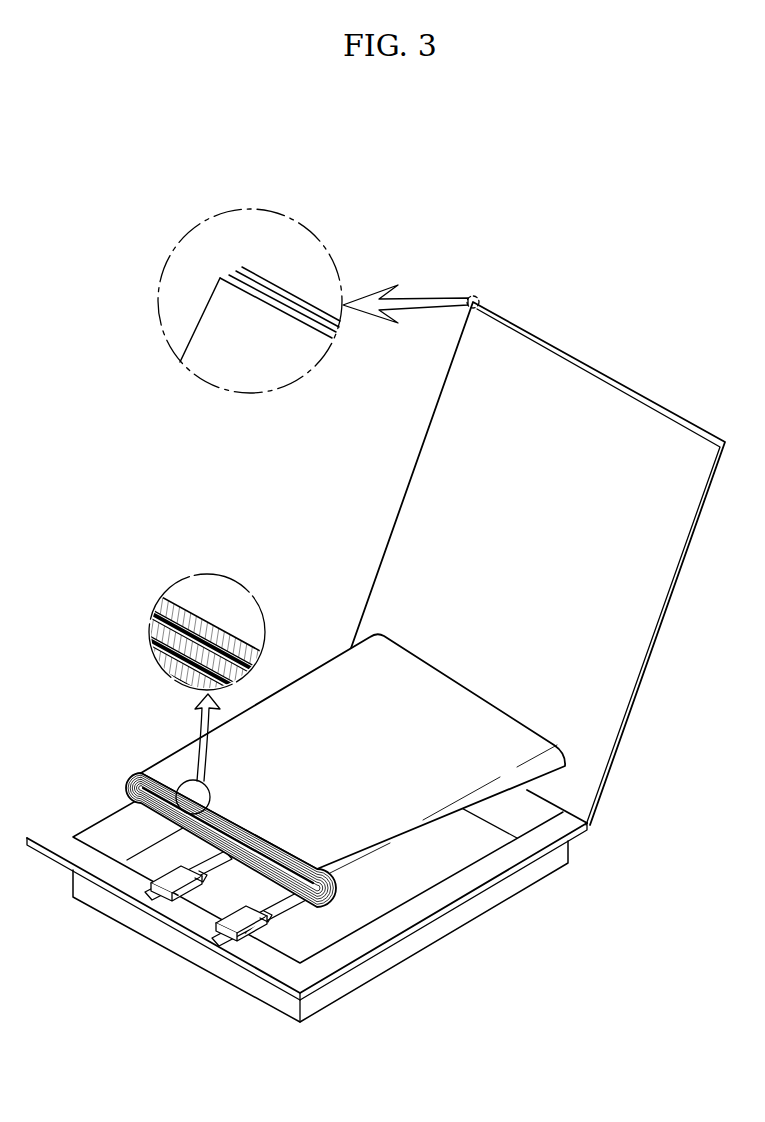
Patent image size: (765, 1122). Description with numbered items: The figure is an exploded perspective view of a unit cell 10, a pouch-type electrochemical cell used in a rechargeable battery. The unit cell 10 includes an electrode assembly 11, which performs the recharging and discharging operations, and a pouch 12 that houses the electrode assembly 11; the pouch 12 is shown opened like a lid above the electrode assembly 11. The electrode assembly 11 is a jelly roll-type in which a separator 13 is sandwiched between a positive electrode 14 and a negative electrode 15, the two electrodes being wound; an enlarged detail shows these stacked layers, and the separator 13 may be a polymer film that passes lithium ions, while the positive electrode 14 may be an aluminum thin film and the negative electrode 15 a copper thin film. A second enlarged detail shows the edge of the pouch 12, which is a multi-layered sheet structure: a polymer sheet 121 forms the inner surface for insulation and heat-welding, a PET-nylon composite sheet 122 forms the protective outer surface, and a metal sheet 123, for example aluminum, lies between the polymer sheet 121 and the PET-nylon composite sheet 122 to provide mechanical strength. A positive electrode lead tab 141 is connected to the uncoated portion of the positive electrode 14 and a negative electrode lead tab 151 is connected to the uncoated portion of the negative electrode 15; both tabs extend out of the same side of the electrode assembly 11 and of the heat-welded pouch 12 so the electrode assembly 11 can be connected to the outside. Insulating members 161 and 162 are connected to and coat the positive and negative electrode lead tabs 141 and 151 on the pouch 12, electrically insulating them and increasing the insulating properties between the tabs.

The unit cell 10 is at (306, 477).
The electrode assembly 11 is at (165, 742).
The pouch 12 is at (600, 750).
The separator 13 is at (160, 598).
The positive electrode 14 is at (192, 635).
The negative electrode 15 is at (199, 623).
The polymer sheet 121 is at (220, 279).
The PET-nylon composite sheet 122 is at (242, 267).
The metal sheet 123 is at (236, 271).
The positive electrode lead tab 141 is at (142, 903).
The negative electrode lead tab 151 is at (210, 937).
The insulating member 161 is at (185, 888).
The insulating member 162 is at (260, 933).